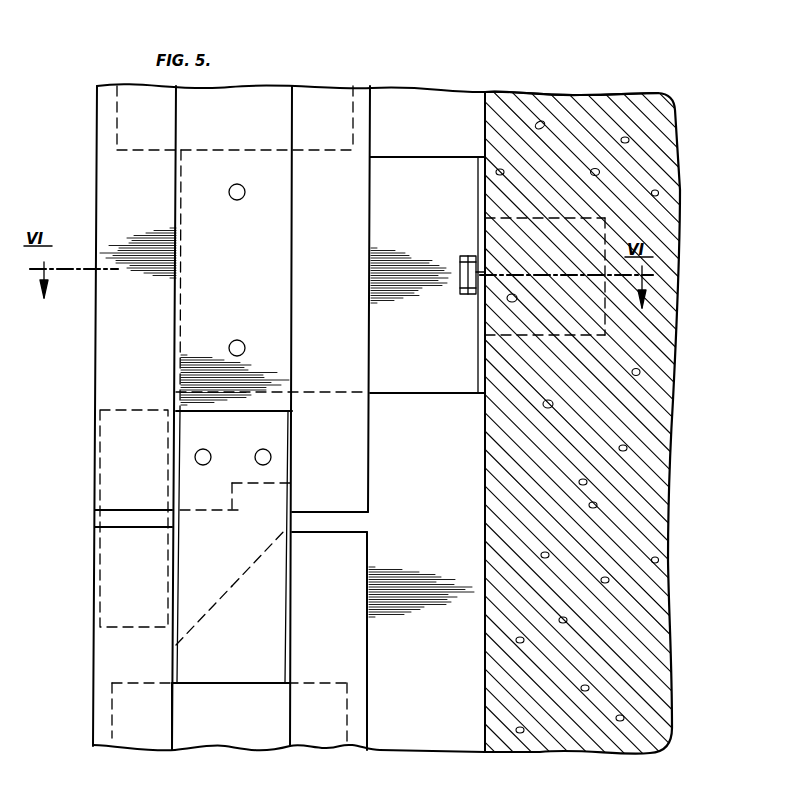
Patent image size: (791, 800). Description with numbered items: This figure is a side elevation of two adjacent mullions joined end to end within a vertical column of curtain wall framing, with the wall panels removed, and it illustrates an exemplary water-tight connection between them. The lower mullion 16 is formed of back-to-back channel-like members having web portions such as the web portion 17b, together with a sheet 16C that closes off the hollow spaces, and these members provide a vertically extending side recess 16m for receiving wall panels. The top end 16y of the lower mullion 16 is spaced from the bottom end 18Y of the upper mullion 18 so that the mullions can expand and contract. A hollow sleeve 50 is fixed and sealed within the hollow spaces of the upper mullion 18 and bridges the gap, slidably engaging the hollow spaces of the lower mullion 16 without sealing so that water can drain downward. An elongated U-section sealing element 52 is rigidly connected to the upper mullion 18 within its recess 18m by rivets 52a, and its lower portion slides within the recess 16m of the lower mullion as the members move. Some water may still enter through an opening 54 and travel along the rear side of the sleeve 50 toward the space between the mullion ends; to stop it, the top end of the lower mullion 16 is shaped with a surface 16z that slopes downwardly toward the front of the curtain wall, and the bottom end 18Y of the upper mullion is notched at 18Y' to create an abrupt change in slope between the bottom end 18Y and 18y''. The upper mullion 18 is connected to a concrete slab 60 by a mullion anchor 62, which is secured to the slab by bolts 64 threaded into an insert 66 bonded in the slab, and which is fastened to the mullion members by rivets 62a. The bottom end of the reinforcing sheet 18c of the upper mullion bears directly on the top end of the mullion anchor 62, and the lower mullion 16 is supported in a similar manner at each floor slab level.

The mullion member 16 is at (82, 668).
The sheet 16C is at (112, 737).
The side recess 16m is at (172, 704).
The top end 16y is at (98, 527).
The sloping surface 16z is at (234, 582).
The web portion 17b is at (217, 606).
The mullion member 18 is at (78, 376).
The reinforcing sheet 18c is at (116, 118).
The mullion recess 18m is at (177, 308).
The bottom end 18Y is at (80, 502).
The notch 18Y' is at (239, 493).
The bottom end portion 18y'' is at (212, 528).
The hollow sleeve 50 is at (92, 522).
The U-section sealing element 52 is at (170, 432).
The rivets 52a is at (257, 452).
The opening 54 is at (165, 511).
The concrete slab 60 is at (668, 437).
The mullion anchor 62 is at (421, 157).
The rivets 62a is at (237, 184).
The bolts 64 is at (462, 256).
The insert 66 is at (604, 228).